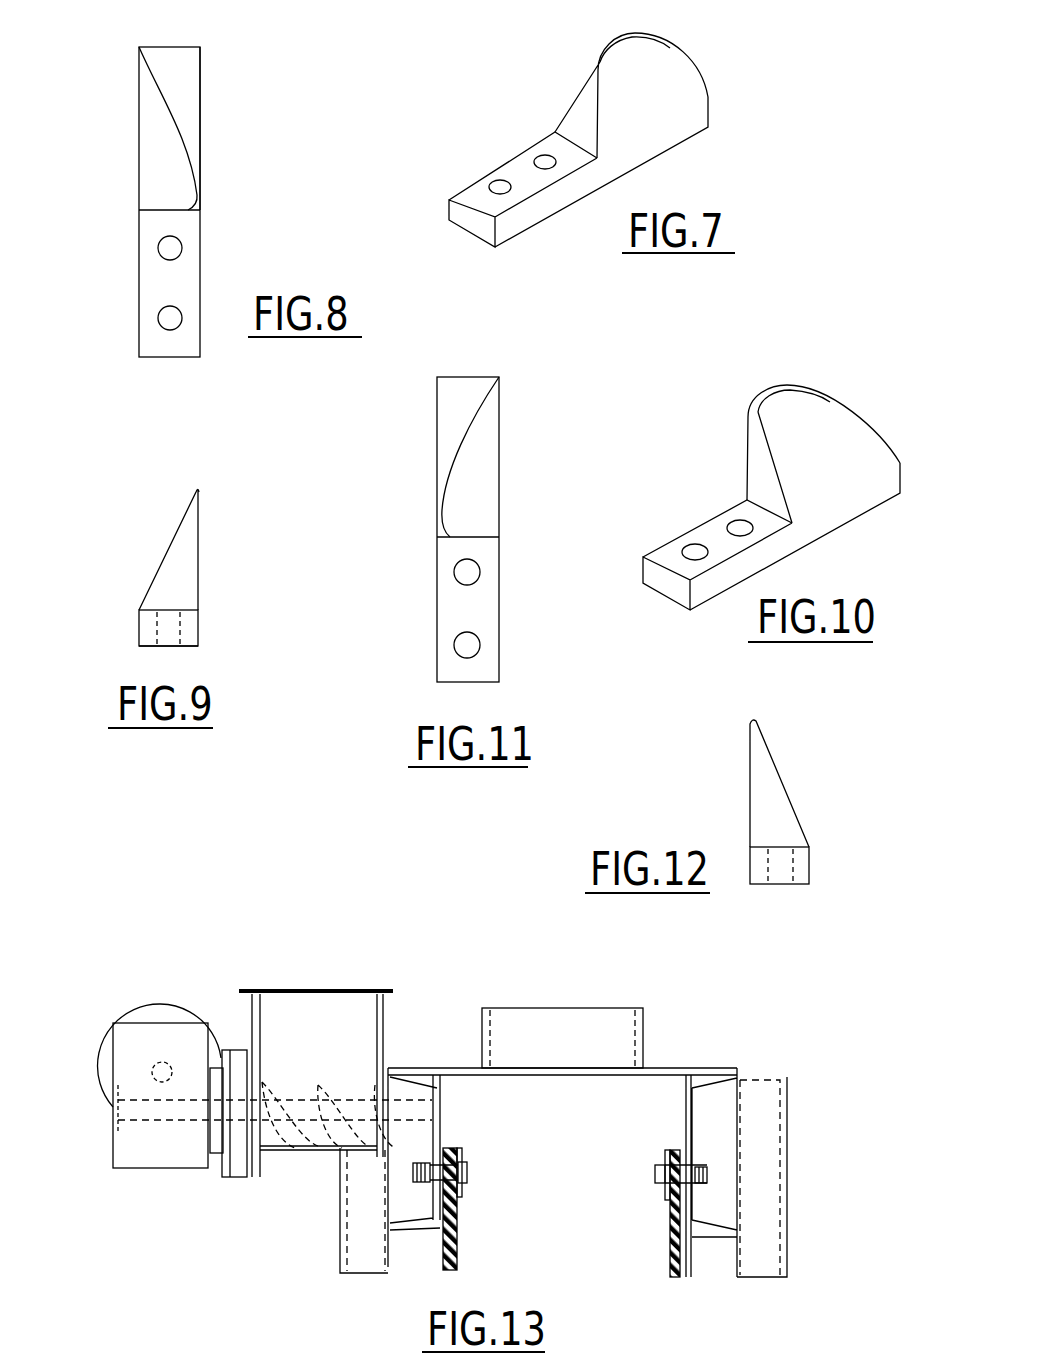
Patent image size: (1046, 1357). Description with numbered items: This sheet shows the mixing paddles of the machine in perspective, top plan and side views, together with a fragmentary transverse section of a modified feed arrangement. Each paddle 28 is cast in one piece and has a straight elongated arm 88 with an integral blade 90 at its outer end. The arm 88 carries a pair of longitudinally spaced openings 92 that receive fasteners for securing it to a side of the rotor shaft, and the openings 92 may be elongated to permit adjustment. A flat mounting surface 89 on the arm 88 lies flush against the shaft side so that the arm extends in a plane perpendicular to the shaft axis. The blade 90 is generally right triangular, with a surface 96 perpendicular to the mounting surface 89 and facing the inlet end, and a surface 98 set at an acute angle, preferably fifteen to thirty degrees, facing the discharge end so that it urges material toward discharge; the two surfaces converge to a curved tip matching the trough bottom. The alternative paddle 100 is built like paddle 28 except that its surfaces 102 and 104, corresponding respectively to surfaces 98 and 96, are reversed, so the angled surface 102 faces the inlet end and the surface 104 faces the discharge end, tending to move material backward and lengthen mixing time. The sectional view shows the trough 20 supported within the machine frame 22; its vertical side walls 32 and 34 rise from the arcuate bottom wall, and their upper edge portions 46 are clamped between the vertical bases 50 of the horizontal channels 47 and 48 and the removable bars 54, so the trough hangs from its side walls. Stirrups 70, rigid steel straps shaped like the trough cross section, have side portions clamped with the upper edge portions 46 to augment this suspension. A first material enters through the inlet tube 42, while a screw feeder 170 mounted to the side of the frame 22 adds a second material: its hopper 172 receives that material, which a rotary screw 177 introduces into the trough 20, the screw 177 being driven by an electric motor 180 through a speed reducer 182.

In FIG. 13, the trough 20 is at (665, 1255).
In FIG. 13, the machine frame 22 is at (797, 1112).
In FIG. 8, the paddle 28 is at (179, 180).
In FIG. 7, the paddle 28 is at (604, 144).
In FIG. 9, the paddle 28 is at (180, 550).
In FIG. 13, the side wall 32 is at (457, 1235).
In FIG. 13, the side wall 34 is at (670, 1220).
In FIG. 13, the inlet tube 42 is at (615, 1007).
In FIG. 13, the upper edge portion 46 is at (448, 1147).
In FIG. 13, the channel 47 is at (400, 1273).
In FIG. 13, the channel 48 is at (703, 1238).
In FIG. 13, the channel base 50 is at (433, 1203).
In FIG. 13, the bar 54 is at (462, 1155).
In FIG. 13, the stirrup 70 is at (440, 1260).
In FIG. 8, the arm 88 is at (145, 268).
In FIG. 7, the arm 88 is at (570, 207).
In FIG. 9, the arm 88 is at (140, 625).
In FIG. 11, the arm 88 is at (440, 645).
In FIG. 10, the arm 88 is at (763, 557).
In FIG. 12, the arm 88 is at (807, 863).
In FIG. 9, the mounting surface 89 is at (187, 648).
In FIG. 8, the blade 90 is at (179, 106).
In FIG. 7, the blade 90 is at (633, 95).
In FIG. 9, the blade 90 is at (201, 523).
In FIG. 8, the openings 92 is at (170, 307).
In FIG. 7, the openings 92 is at (535, 158).
In FIG. 11, the openings 92 is at (457, 578).
In FIG. 8, the surface 96 is at (202, 93).
In FIG. 7, the surface 96 is at (622, 60).
In FIG. 9, the surface 96 is at (202, 527).
In FIG. 8, the surface 98 is at (175, 133).
In FIG. 9, the surface 98 is at (172, 528).
In FIG. 11, the paddle 100 is at (473, 529).
In FIG. 10, the paddle 100 is at (790, 483).
In FIG. 12, the paddle 100 is at (796, 797).
In FIG. 11, the surface 102 is at (474, 457).
In FIG. 10, the surface 102 is at (827, 408).
In FIG. 12, the surface 102 is at (772, 779).
In FIG. 11, the surface 104 is at (435, 408).
In FIG. 12, the surface 104 is at (750, 745).
In FIG. 13, the screw feeder 170 is at (230, 1190).
In FIG. 13, the hopper 172 is at (272, 988).
In FIG. 13, the rotary screw 177 is at (318, 1077).
In FIG. 13, the electric motor 180 is at (133, 1020).
In FIG. 13, the speed reducer 182 is at (140, 1163).